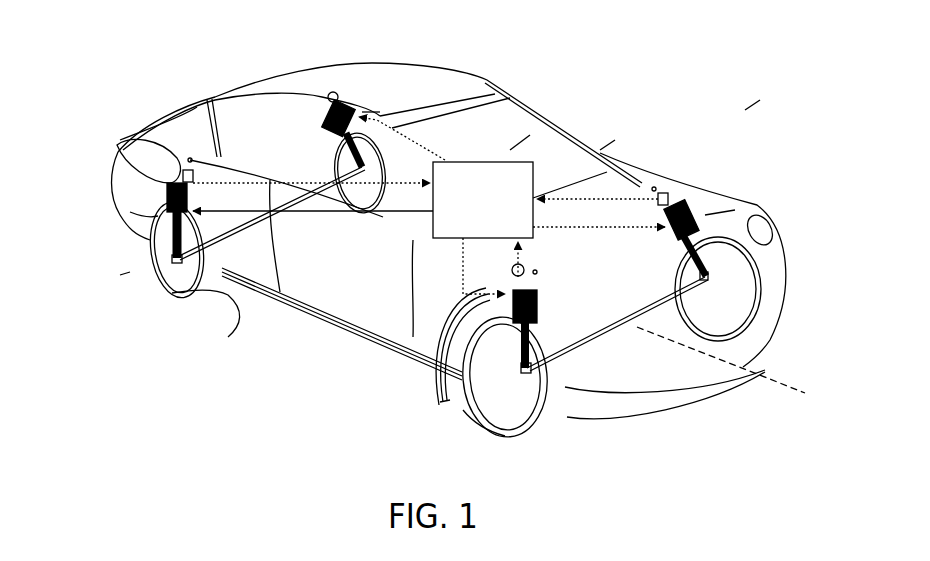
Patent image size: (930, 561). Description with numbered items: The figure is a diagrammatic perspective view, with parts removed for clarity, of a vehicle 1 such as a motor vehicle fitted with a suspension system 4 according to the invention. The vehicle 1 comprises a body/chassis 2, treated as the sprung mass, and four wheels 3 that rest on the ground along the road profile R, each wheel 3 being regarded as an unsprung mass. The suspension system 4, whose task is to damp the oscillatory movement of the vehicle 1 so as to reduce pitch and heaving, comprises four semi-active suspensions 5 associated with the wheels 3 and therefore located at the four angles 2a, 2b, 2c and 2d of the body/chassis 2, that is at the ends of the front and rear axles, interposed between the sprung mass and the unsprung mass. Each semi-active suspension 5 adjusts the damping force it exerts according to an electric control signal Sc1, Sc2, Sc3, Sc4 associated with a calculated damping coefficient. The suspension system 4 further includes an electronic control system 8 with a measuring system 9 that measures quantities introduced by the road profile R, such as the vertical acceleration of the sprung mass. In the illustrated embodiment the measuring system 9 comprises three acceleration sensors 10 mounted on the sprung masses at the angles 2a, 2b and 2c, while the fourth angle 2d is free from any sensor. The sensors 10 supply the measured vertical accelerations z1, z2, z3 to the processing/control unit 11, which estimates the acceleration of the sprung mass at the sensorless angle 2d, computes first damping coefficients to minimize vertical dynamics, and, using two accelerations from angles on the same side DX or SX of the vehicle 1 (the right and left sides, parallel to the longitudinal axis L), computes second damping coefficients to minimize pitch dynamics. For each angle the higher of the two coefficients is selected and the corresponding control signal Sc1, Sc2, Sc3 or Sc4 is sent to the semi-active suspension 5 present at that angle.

The vehicle 1 is at (756, 102).
The body/chassis 2 is at (410, 67).
The angle of the body/chassis 2a is at (470, 407).
The angle of the body/chassis 2b is at (730, 210).
The angle of the body/chassis 2c is at (143, 218).
The angle of the body/chassis 2d is at (372, 110).
The wheel 3 is at (333, 163).
The suspension system 4 is at (147, 189).
The semi-active suspension 5 is at (171, 186).
The electronic control system 8 is at (521, 140).
The measuring system 9 is at (190, 156).
The acceleration sensor 10 is at (214, 170).
The processing/control unit 11 is at (469, 210).
The left side SX is at (607, 144).
The right side DX is at (333, 289).
The road profile R is at (126, 269).
The longitudinal axis L is at (788, 398).
The electric control signal Sc1 is at (484, 266).
The electric control signal Sc2 is at (599, 215).
The electric control signal Sc3 is at (313, 203).
The electric control signal Sc4 is at (414, 138).
The vertical acceleration z1 is at (506, 259).
The vertical acceleration z2 is at (597, 186).
The vertical acceleration z3 is at (311, 169).